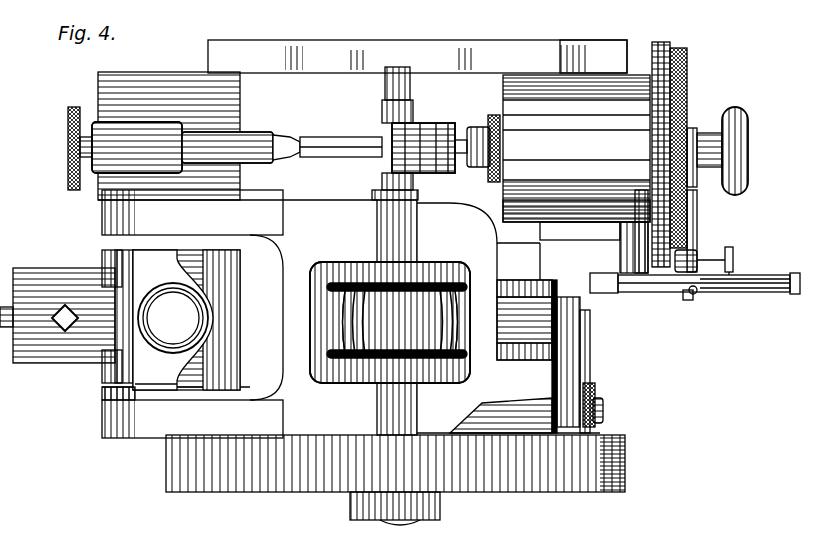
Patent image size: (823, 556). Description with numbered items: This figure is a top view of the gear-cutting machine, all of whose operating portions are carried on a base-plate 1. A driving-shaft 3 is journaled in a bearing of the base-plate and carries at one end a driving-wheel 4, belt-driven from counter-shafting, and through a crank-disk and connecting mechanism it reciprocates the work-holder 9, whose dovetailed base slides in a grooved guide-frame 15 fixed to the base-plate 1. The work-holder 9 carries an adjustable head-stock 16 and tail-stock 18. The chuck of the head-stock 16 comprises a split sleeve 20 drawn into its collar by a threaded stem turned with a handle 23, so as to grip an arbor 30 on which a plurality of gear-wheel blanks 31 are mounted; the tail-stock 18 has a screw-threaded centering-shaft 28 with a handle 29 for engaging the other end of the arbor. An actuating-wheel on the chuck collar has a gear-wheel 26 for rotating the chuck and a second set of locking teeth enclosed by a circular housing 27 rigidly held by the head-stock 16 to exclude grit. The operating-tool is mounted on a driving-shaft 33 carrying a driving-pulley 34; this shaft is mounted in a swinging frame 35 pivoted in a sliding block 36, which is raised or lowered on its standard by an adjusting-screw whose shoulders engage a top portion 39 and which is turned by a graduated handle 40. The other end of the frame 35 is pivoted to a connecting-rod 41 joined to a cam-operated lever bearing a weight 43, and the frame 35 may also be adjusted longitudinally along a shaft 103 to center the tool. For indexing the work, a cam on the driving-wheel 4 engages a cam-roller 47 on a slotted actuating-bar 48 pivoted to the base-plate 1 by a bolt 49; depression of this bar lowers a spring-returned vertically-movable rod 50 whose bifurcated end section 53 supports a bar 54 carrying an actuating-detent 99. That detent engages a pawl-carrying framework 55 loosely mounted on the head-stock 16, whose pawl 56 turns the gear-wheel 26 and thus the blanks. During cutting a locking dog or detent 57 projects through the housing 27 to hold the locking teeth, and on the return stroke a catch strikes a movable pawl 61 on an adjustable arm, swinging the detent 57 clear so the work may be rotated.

The base-plate 1 is at (565, 282).
The driving-shaft 3 is at (400, 522).
The driving-wheel 4 is at (290, 483).
The work-holder 9 is at (315, 85).
The guide-frame 15 is at (601, 70).
The head-stock 16 is at (576, 148).
The tail-stock 18 is at (137, 147).
The split sleeve 20 is at (470, 128).
The handle 23 is at (750, 140).
The gear-wheel 26 is at (688, 83).
The circular shell or housing 27 is at (661, 50).
The centering-shaft 28 is at (290, 138).
The handle 29 is at (68, 115).
The arbor 30 is at (366, 158).
The gear-wheel blanks 31 is at (405, 137).
The driving-shaft 33 is at (345, 264).
The driving-pulley 34 is at (400, 312).
The swinging frame 35 is at (349, 255).
The sliding block 36 is at (110, 262).
The top portion 39 is at (156, 369).
The handle 40 is at (173, 419).
The connecting-rod 41 is at (588, 338).
The weight 43 is at (33, 358).
The cam-roller 47 is at (598, 398).
The actuating-bar 48 is at (590, 372).
The bolt 49 is at (603, 416).
The vertically-movable rod 50 is at (605, 283).
The bifurcated end section 53 is at (720, 292).
The bar 54 is at (770, 277).
The pawl-carrying framework 55 is at (692, 225).
The pawl 56 is at (684, 253).
The locking dog or detent 57 is at (190, 265).
The movable pawl 61 is at (733, 250).
The actuating-detent 99 is at (695, 294).
The shaft 103 is at (105, 392).